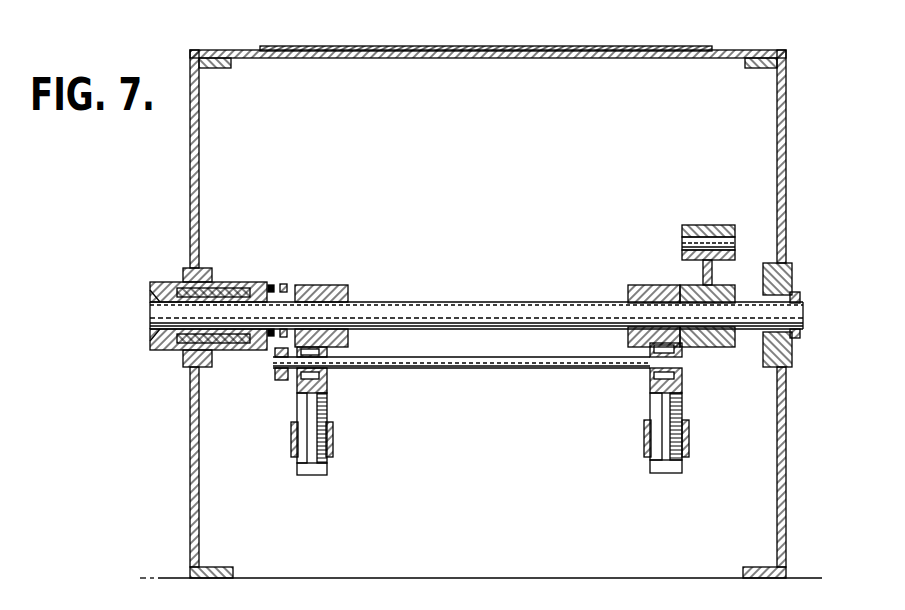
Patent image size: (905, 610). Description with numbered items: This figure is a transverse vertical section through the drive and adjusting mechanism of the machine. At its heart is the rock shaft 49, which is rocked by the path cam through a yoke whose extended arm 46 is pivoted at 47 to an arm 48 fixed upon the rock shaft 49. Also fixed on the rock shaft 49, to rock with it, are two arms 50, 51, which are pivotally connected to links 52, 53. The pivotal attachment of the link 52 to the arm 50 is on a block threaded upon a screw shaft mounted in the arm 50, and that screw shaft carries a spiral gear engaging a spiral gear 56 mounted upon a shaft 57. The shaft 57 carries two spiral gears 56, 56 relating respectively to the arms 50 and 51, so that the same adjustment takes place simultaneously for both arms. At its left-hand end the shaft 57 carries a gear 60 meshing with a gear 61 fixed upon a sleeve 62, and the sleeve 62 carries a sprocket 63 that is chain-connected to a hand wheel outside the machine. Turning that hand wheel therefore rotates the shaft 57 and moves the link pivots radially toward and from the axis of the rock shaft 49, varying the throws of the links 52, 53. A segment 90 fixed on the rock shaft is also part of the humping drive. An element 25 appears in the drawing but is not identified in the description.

The top cover plate 25 is at (472, 47).
The segment 90 is at (163, 287).
The sprocket 63 is at (271, 285).
The gear 61 is at (284, 284).
The sleeve 62 is at (300, 287).
The rock shaft 49 is at (530, 318).
The shaft 57 is at (507, 362).
The gear 60 is at (279, 376).
The spiral gear 56 is at (327, 375).
The arm 51 is at (305, 410).
The link 53 is at (292, 438).
The arm 50 is at (697, 398).
The link 52 is at (645, 435).
The extended arm 46 is at (690, 226).
The pivot 47 is at (683, 241).
The arm 48 is at (707, 225).